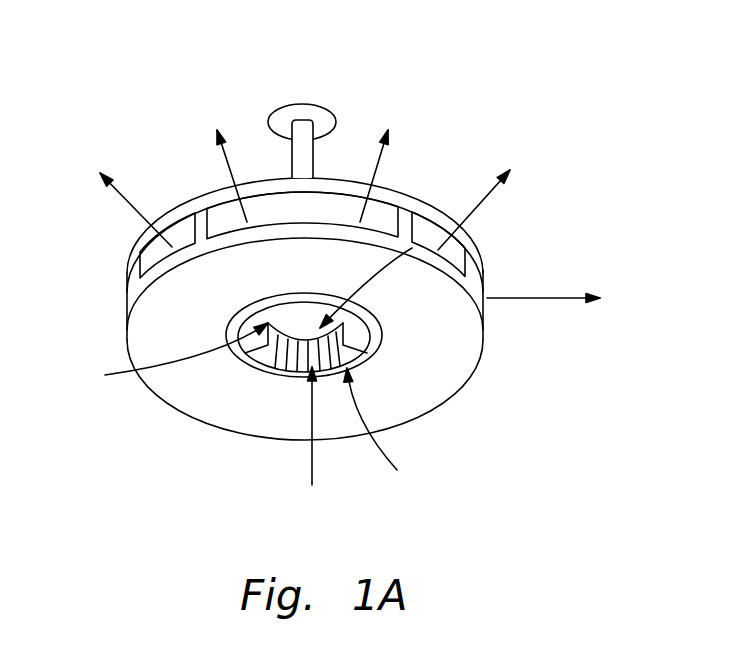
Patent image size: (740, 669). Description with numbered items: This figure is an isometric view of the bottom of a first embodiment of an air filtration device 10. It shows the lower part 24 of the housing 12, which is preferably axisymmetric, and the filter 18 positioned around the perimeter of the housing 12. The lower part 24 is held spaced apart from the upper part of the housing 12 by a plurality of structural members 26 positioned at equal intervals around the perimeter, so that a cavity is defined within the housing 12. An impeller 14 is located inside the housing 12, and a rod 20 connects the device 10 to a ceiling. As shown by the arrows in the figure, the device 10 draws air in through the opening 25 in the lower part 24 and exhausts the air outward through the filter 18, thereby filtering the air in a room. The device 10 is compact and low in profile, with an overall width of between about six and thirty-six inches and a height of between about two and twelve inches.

The air filtration device 10 is at (458, 102).
The housing 12 is at (133, 255).
The impeller 14 is at (293, 368).
The filter 18 is at (470, 270).
The rod 20 is at (310, 128).
The lower part 24 is at (422, 392).
The opening 25 is at (363, 336).
The structural members 26 is at (199, 218).